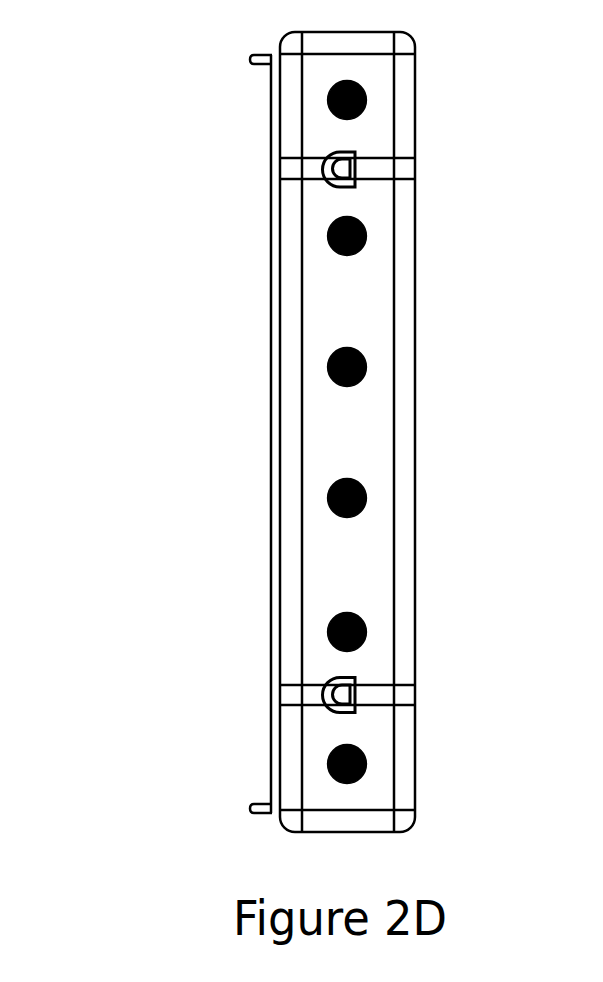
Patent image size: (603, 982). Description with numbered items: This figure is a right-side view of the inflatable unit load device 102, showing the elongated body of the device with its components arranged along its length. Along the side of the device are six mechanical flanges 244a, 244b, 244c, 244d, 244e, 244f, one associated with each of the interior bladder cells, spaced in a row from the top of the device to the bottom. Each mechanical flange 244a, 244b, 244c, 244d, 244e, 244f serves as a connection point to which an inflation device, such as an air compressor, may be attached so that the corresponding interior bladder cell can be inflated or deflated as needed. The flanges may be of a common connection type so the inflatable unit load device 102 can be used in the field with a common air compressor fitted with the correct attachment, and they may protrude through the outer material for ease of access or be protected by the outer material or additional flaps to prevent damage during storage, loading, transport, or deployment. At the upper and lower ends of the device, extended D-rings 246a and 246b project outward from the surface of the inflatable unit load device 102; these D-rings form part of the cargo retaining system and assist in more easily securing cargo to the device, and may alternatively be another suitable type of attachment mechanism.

The inflatable unit load device 102 is at (518, 103).
The mechanical flange 244a is at (366, 95).
The mechanical flange 244b is at (366, 231).
The mechanical flange 244c is at (366, 362).
The mechanical flange 244d is at (366, 493).
The mechanical flange 244e is at (366, 627).
The mechanical flange 244f is at (366, 759).
The extended D-ring 246a is at (275, 55).
The extended D-ring 246b is at (275, 804).